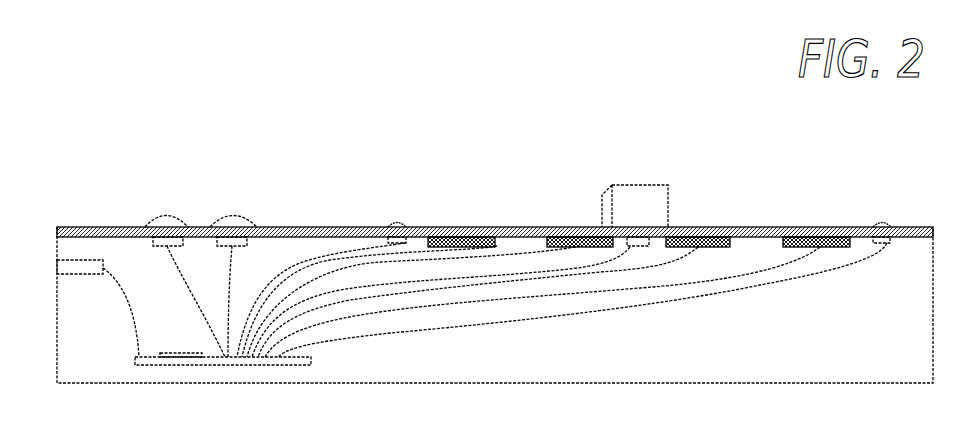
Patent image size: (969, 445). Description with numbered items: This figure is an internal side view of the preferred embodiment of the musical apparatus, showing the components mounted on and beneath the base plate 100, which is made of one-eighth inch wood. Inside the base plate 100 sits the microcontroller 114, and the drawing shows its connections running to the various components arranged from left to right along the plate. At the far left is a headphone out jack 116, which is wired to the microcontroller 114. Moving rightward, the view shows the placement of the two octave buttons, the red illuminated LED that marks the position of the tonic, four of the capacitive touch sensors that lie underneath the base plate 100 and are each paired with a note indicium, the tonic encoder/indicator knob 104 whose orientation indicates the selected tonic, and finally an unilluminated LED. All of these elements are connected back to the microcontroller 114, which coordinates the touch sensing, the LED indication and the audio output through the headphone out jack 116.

The base plate 100 is at (54, 230).
The tonic encoder/indicator knob 104 is at (638, 177).
The microcontroller 114 is at (195, 367).
The headphone out jack 116 is at (75, 282).